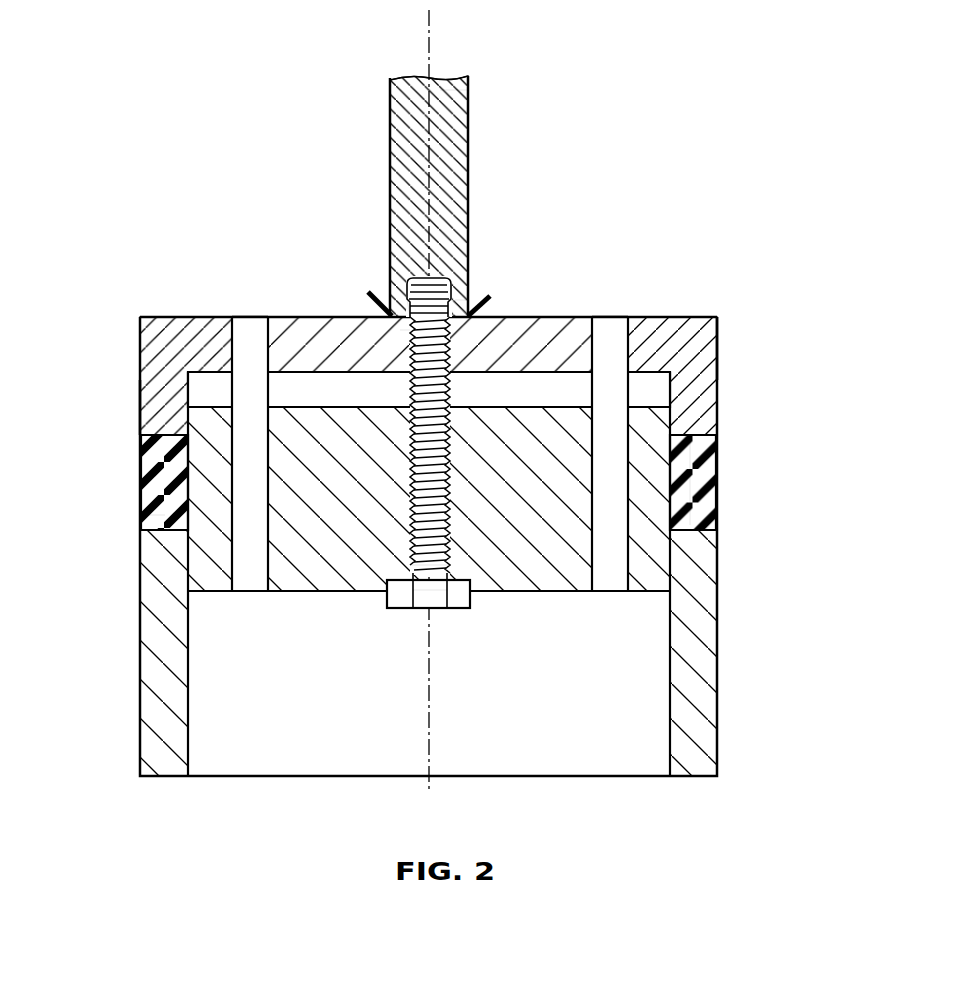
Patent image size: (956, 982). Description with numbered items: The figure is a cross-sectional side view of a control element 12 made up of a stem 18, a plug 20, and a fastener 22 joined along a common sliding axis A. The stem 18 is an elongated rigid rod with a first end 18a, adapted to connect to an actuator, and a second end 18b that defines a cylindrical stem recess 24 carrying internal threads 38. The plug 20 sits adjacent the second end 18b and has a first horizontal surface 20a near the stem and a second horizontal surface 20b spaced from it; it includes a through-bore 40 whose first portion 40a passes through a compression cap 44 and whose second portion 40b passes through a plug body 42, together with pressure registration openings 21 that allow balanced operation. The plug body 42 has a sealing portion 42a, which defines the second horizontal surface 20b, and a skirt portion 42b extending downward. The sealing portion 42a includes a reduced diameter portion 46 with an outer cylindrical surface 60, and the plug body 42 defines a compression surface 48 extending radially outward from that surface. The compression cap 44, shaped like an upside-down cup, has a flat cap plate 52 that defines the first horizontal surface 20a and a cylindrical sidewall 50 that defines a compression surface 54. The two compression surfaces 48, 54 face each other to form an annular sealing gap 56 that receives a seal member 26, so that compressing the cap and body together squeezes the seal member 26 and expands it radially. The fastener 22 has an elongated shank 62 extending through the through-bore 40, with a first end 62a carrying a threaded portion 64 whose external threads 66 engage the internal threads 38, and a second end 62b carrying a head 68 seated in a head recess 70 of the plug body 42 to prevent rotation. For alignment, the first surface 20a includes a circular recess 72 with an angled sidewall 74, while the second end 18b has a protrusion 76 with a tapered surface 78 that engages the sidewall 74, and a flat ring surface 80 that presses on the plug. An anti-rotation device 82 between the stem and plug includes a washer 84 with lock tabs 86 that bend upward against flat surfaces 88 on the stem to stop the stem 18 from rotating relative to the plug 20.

The sliding axis A is at (427, 50).
The control element 12 is at (522, 166).
The stem 18 is at (384, 115).
The first end 18a is at (463, 95).
The second end 18b is at (462, 300).
The plug 20 is at (722, 362).
The first horizontal surface 20a is at (668, 318).
The second horizontal surface 20b is at (486, 594).
The pressure registration openings 21 is at (245, 402).
The fastener 22 is at (430, 446).
The stem recess 24 is at (453, 296).
The seal member 26 is at (690, 456).
The internal threads 38 is at (416, 292).
The through-bore 40 is at (438, 608).
The first portion 40a is at (447, 378).
The second portion 40b is at (420, 608).
The plug body 42 is at (655, 573).
The sealing portion 42a is at (293, 543).
The skirt portion 42b is at (165, 687).
The compression cap 44 is at (708, 330).
The reduced diameter portion 46 is at (215, 465).
The compression surface 48 is at (155, 528).
The cylindrical sidewall 50 is at (150, 405).
The flat cap plate 52 is at (215, 338).
The compression surface 54 is at (165, 436).
The annular sealing gap 56 is at (686, 528).
The outer cylindrical surface 60 is at (690, 480).
The elongated shank 62 is at (430, 428).
The first end 62a is at (440, 282).
The second end 62b is at (410, 578).
The threaded portion 64 is at (422, 280).
The external threads 66 is at (412, 302).
The head 68 is at (462, 600).
The head recess 70 is at (402, 606).
The circular recess 72 is at (450, 294).
The angled sidewall 74 is at (465, 302).
The protrusion 76 is at (386, 312).
The tapered surface 78 is at (270, 340).
The flat ring surface 80 is at (406, 333).
The anti-rotation device 82 is at (375, 290).
The washer 84 is at (482, 348).
The lock tabs 86 is at (398, 319).
The flat surfaces 88 is at (472, 312).